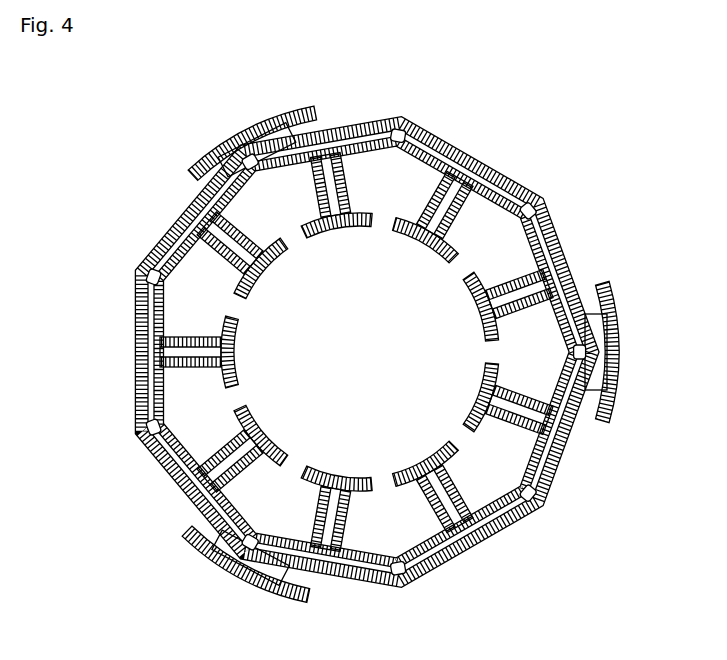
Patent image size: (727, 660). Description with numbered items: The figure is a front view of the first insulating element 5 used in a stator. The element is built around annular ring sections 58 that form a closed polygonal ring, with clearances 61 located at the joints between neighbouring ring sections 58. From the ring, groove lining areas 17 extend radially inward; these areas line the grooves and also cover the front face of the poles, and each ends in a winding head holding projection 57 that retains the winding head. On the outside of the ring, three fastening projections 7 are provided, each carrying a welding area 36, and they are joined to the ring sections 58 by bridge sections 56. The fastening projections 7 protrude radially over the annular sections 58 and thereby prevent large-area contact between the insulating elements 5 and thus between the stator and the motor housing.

The first insulating element 5 is at (634, 124).
The fastening projection 7 is at (284, 113).
The groove lining area 17 is at (422, 470).
The welding area 36 is at (225, 142).
The bridge section 56 is at (258, 156).
The winding head holding projection 57 is at (348, 216).
The ring section 58 is at (345, 128).
The clearance 61 is at (400, 130).